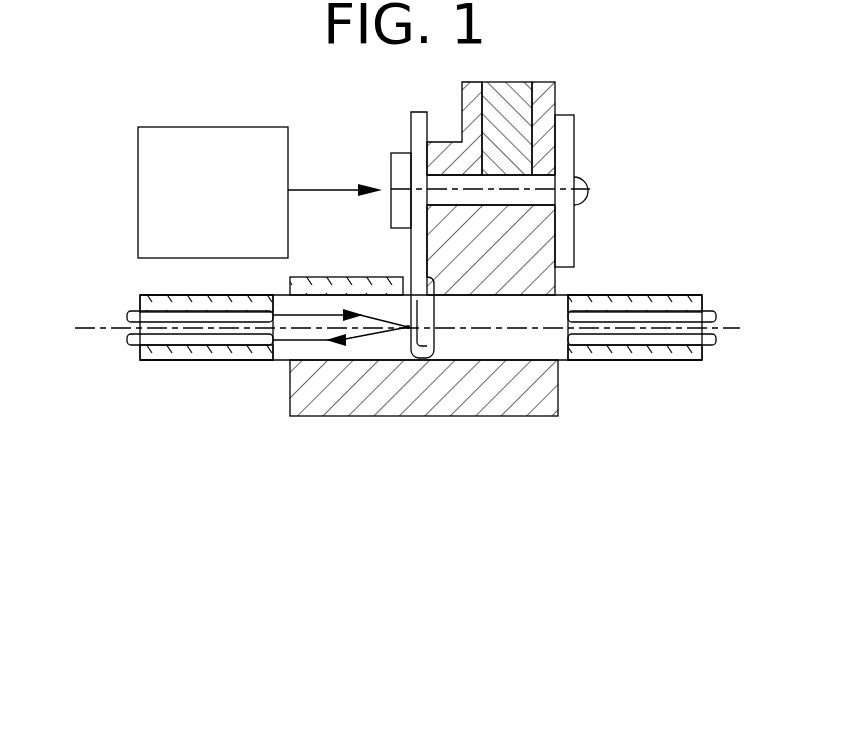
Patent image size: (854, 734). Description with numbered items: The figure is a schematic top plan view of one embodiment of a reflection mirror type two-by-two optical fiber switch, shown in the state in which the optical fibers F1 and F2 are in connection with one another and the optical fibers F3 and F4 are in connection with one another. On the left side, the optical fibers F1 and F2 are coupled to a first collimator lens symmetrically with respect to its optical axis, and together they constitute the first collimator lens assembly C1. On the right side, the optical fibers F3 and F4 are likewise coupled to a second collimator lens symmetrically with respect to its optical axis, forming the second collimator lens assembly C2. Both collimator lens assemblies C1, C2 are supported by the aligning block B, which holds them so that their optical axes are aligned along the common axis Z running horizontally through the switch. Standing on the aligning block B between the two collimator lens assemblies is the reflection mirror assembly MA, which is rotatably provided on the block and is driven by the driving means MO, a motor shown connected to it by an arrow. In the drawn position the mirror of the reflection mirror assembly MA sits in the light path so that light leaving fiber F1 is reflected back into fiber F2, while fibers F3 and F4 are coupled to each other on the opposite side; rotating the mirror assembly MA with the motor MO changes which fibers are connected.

The driving means (motor) MO is at (260, 192).
The reflection mirror assembly MA is at (599, 128).
The optical fiber F1 is at (132, 303).
The optical fiber F2 is at (177, 362).
The optical fiber F3 is at (672, 300).
The optical fiber F4 is at (667, 358).
The first collimator lens assembly C1 is at (245, 374).
The second collimator lens assembly C2 is at (595, 383).
The aligning block B is at (326, 431).
The optical axis Z is at (412, 329).